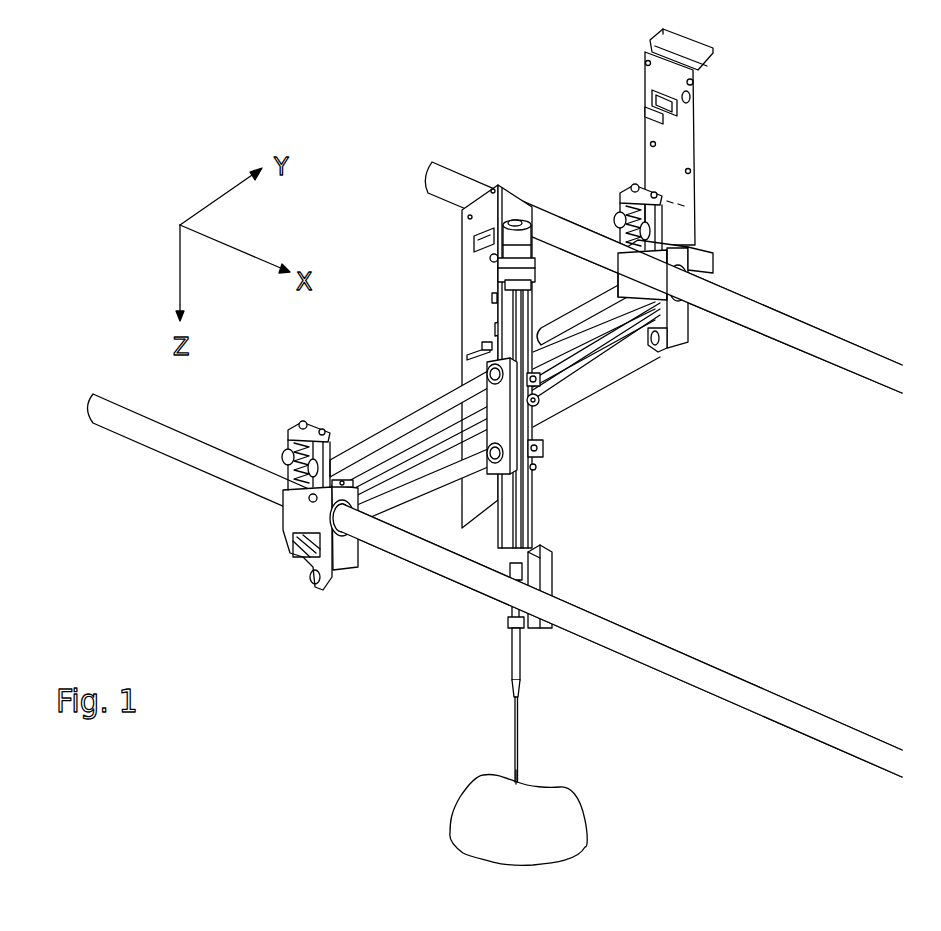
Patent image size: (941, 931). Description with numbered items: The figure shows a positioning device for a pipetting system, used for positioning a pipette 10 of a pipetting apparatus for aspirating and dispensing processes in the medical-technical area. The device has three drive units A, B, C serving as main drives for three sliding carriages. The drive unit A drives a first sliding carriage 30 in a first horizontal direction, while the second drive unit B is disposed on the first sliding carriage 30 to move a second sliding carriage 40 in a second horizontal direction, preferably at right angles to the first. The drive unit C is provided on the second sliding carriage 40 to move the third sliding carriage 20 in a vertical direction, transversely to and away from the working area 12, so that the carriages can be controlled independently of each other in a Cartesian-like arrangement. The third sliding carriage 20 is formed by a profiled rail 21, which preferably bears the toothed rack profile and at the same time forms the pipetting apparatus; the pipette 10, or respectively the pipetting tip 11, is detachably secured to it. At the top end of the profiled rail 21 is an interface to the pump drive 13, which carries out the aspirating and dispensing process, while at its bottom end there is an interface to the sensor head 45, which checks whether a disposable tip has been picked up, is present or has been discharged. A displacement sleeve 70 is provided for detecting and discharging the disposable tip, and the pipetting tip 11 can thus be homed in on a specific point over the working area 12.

The pipette 10 is at (513, 739).
The pipetting tip 11 is at (520, 783).
The working area 12 is at (515, 825).
The pump drive 13 is at (531, 260).
The third sliding carriage 20 is at (573, 366).
The profiled rail 21 is at (519, 520).
The first sliding carriage 30 is at (296, 522).
The second sliding carriage 40 is at (476, 328).
The sensor head 45 is at (554, 573).
The displacement sleeve 70 is at (511, 647).
The drive unit A is at (289, 427).
The drive unit B is at (704, 243).
The drive unit C is at (547, 376).